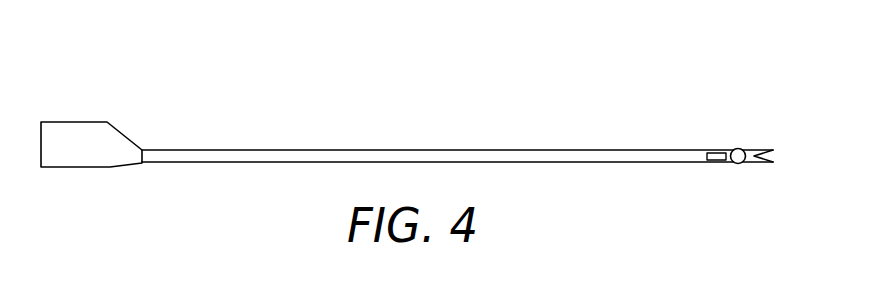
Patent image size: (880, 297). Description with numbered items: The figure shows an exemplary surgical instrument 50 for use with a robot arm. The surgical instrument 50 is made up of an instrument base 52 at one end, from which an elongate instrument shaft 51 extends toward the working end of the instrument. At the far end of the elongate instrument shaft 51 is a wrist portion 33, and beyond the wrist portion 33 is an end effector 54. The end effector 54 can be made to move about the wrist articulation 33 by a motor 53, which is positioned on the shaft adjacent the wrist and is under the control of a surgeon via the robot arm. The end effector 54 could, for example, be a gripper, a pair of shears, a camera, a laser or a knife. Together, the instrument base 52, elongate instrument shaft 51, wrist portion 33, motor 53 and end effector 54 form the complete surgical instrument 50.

The surgical instrument 50 is at (557, 108).
The elongate instrument shaft 51 is at (268, 149).
The instrument base 52 is at (75, 121).
The motor 53 is at (714, 163).
The wrist portion 33 is at (739, 148).
The end effector 54 is at (757, 164).